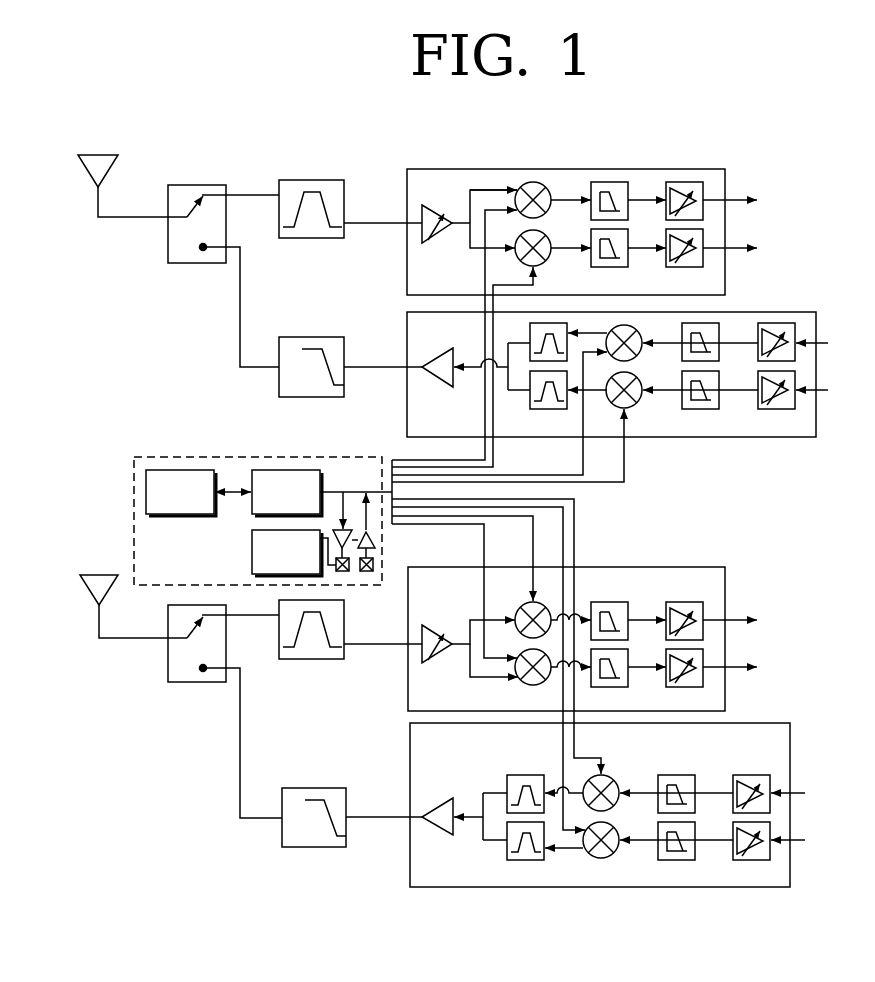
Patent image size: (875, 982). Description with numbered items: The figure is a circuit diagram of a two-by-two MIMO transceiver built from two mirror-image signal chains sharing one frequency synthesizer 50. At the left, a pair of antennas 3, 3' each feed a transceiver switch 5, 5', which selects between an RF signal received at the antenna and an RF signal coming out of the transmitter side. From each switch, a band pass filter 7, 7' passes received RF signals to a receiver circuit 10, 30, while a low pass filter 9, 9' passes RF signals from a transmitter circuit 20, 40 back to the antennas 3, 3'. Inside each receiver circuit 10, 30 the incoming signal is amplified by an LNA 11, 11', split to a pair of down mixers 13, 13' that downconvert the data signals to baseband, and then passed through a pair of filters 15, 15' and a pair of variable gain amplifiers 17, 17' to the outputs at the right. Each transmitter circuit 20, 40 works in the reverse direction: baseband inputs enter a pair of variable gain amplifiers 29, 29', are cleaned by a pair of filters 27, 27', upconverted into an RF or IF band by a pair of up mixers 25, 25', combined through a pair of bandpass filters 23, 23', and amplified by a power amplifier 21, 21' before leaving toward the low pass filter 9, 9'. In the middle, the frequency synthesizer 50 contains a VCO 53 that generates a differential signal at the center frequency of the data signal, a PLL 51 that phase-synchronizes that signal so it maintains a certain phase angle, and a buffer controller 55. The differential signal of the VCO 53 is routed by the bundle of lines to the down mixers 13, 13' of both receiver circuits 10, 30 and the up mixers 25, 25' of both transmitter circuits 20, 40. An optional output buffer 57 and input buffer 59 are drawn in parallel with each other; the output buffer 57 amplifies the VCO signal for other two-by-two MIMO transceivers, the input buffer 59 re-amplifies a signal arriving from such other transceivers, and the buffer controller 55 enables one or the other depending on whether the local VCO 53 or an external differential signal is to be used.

The antenna 3 is at (132, 166).
The transceiver switch 5 is at (223, 255).
The band pass filter 7 is at (350, 190).
The low pass filter 9 is at (350, 347).
The receiver circuit 10 is at (585, 216).
The LNA 11 is at (467, 209).
The down mixer 13 is at (533, 202).
The filter 15 is at (589, 202).
The variable gain amplifier 17 is at (692, 202).
The transmitter circuit 20 is at (633, 360).
The power amplifier 21 is at (463, 354).
The bandpass filter 23 is at (529, 363).
The up mixer 25 is at (619, 359).
The filter 27 is at (700, 359).
The variable gain amplifier 29 is at (793, 346).
The receiver circuit 30 is at (590, 639).
The transmitter circuit 40 is at (624, 805).
The frequency synthesizer 50 is at (248, 504).
The PLL 51 is at (178, 470).
The VCO 53 is at (286, 470).
The buffer controller 55 is at (252, 549).
The output buffer 57 is at (334, 530).
The input buffer 59 is at (378, 544).
The antenna 3' is at (113, 606).
The transceiver switch 5' is at (225, 711).
The band pass filter 7' is at (350, 653).
The low pass filter 9' is at (352, 841).
The LNA 11' is at (470, 662).
The down mixer 13' is at (518, 628).
The filter 15' is at (589, 629).
The variable gain amplifier 17' is at (692, 629).
The power amplifier 21' is at (452, 796).
The bandpass filter 23' is at (509, 805).
The up mixer 25' is at (602, 803).
The filter 27' is at (676, 793).
The variable gain amplifier 29' is at (769, 793).